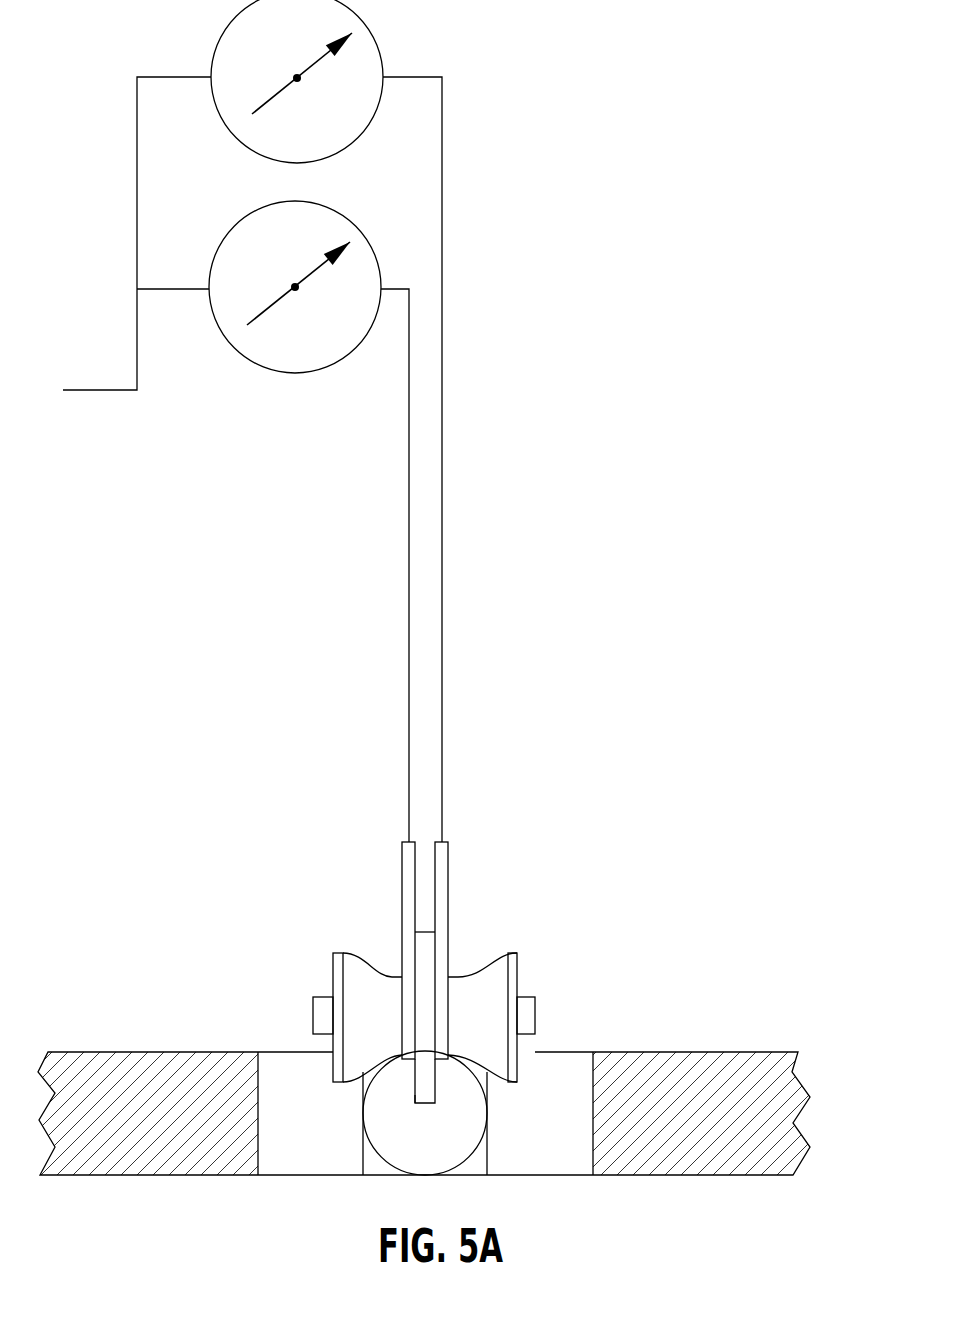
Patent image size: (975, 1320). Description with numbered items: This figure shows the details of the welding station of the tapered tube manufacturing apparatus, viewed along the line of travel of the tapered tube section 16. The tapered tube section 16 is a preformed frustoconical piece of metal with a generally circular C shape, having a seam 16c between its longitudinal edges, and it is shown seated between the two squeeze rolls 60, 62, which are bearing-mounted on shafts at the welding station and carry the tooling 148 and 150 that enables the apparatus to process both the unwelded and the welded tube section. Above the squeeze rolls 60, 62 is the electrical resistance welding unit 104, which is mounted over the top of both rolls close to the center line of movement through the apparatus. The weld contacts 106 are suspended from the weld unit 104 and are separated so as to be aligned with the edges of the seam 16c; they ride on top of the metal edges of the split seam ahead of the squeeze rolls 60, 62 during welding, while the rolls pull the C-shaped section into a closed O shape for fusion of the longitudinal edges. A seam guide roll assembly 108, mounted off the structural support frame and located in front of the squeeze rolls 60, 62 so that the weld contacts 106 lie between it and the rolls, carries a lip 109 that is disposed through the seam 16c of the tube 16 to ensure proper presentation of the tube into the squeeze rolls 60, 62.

The electrical resistance welding unit 104 is at (392, 214).
The weld contacts 106 is at (448, 878).
The seam guide roll assembly 108 is at (518, 952).
The lip 109 is at (425, 1107).
The tapered tube section 16 is at (453, 1137).
The seam 16c is at (418, 1105).
The tooling 148 is at (568, 1137).
The tooling 150 is at (290, 1075).
The squeeze roll 60 is at (715, 1147).
The squeeze roll 62 is at (108, 1143).